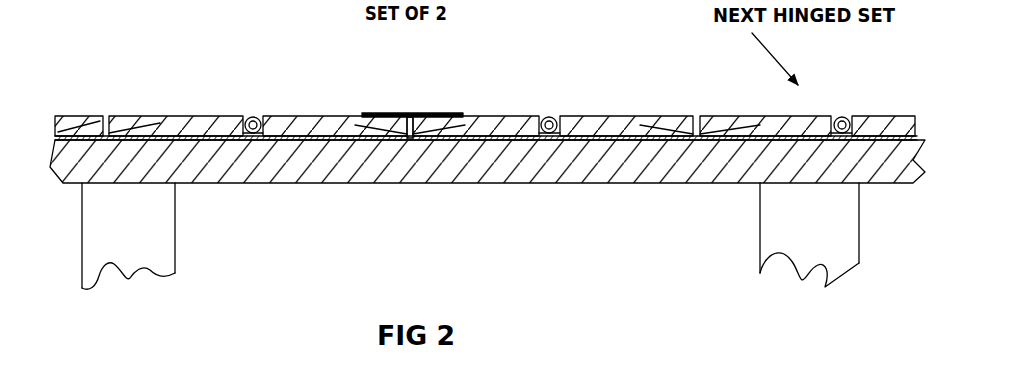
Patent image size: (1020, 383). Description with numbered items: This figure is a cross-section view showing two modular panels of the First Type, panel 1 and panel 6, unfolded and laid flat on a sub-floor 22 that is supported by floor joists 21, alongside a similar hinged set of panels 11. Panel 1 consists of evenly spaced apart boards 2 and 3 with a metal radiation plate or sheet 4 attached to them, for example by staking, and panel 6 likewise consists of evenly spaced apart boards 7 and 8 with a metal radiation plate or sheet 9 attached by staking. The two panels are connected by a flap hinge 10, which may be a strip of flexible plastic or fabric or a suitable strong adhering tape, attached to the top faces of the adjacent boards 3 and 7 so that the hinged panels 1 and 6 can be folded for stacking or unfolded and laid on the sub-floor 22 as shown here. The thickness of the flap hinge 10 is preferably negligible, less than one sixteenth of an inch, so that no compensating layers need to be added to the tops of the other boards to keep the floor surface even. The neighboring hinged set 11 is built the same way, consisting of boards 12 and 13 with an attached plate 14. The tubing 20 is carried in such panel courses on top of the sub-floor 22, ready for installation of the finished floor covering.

The panel 1 is at (290, 74).
The board 2 is at (165, 116).
The board 3 is at (327, 116).
The metal radiation plate 4 is at (130, 124).
The panel 6 is at (573, 69).
The board 7 is at (485, 116).
The board 8 is at (603, 117).
The metal radiation plate 9 is at (510, 143).
The flap hinge 10 is at (409, 116).
The hinged set of panels 11 is at (862, 86).
The board 12 is at (724, 117).
The board 13 is at (897, 117).
The plate 14 is at (780, 143).
The tubing 20 is at (251, 117).
The floor joists 21 is at (177, 248).
The sub-floor 22 is at (388, 183).